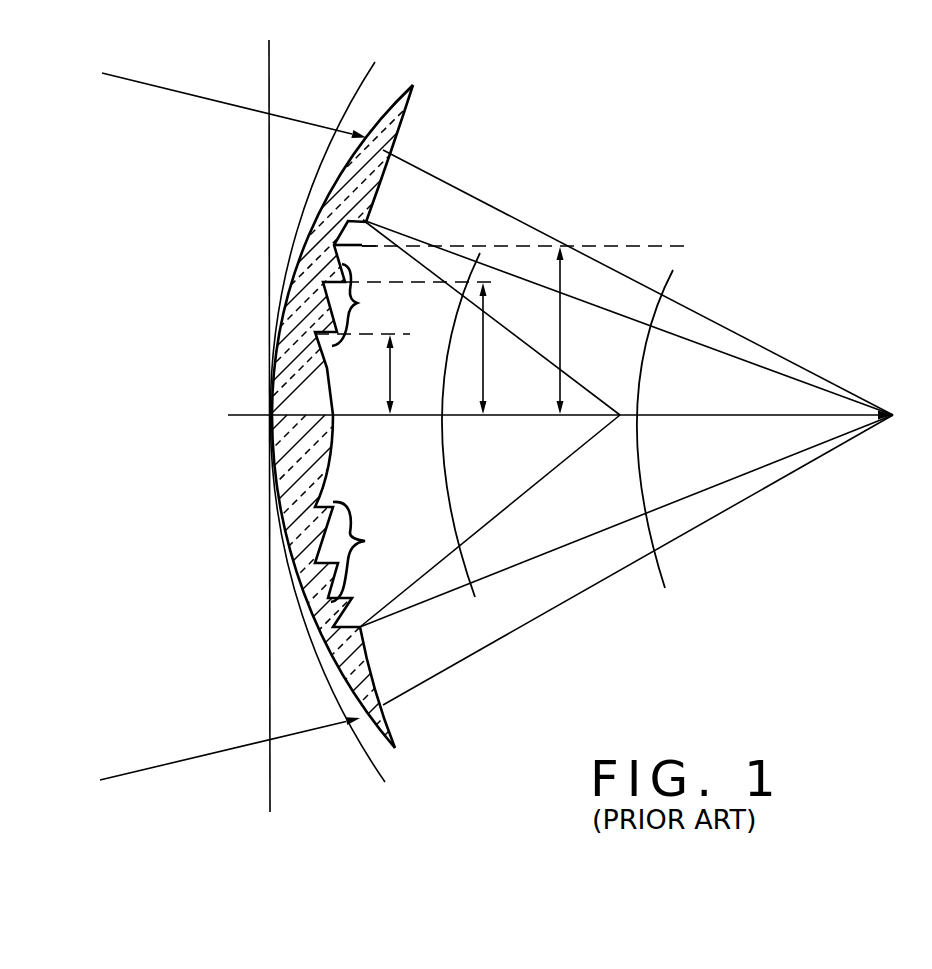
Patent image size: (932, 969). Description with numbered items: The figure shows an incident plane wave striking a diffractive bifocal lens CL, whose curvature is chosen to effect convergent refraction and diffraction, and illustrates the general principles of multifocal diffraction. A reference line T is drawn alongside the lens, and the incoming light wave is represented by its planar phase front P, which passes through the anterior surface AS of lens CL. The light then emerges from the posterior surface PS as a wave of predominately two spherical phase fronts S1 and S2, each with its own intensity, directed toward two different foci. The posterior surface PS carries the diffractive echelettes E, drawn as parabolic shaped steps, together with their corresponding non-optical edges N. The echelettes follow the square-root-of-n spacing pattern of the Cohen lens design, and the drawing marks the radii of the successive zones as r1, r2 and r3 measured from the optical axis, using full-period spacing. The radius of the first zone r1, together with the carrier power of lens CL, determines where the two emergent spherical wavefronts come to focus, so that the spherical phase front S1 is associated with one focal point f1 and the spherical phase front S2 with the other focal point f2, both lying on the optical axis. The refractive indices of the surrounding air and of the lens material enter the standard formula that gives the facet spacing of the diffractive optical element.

The tangent reference line T is at (267, 47).
The planar phase front P is at (363, 77).
The diffractive bifocal lens CL is at (352, 410).
The posterior surface PS is at (396, 136).
The anterior surface AS is at (336, 177).
The diffractive echelettes E is at (353, 305).
The non-optical edges N is at (357, 552).
The radius of the first zone r1 is at (362, 374).
The radius of the second zone r2 is at (409, 348).
The radius of the third zone r3 is at (526, 330).
The first spherical phase front S1 is at (473, 443).
The second spherical phase front S2 is at (666, 448).
The first order focal point f1 is at (498, 423).
The second order focal point f2 is at (636, 427).